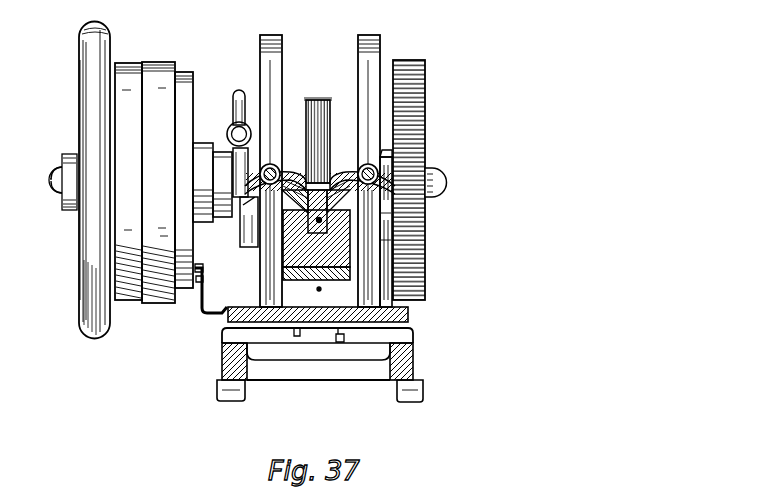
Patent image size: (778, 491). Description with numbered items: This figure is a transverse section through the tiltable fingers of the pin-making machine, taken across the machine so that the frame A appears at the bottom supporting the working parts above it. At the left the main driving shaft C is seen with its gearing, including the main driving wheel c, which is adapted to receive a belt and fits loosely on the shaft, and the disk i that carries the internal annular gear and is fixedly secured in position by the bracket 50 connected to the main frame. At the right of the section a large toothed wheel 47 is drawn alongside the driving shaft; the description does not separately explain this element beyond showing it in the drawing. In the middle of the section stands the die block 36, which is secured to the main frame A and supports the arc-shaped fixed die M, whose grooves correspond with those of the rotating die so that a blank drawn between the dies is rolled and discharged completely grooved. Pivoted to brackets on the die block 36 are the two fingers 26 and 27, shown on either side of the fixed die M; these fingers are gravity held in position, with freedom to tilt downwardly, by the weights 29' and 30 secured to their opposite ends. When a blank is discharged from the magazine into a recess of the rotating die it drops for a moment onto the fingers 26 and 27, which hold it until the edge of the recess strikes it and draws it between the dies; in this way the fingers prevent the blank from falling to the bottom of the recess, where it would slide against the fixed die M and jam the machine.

The main driving shaft C is at (52, 182).
The main driving wheel c is at (162, 288).
The bracket 50 is at (208, 307).
The weight 30 is at (253, 230).
The disk i is at (222, 265).
The fixed die M is at (257, 260).
The die block 36 is at (292, 280).
The finger 27 is at (298, 157).
The finger 26 is at (343, 157).
The gear wheel 47 is at (415, 123).
The weight 29' is at (422, 228).
The frame A is at (328, 368).